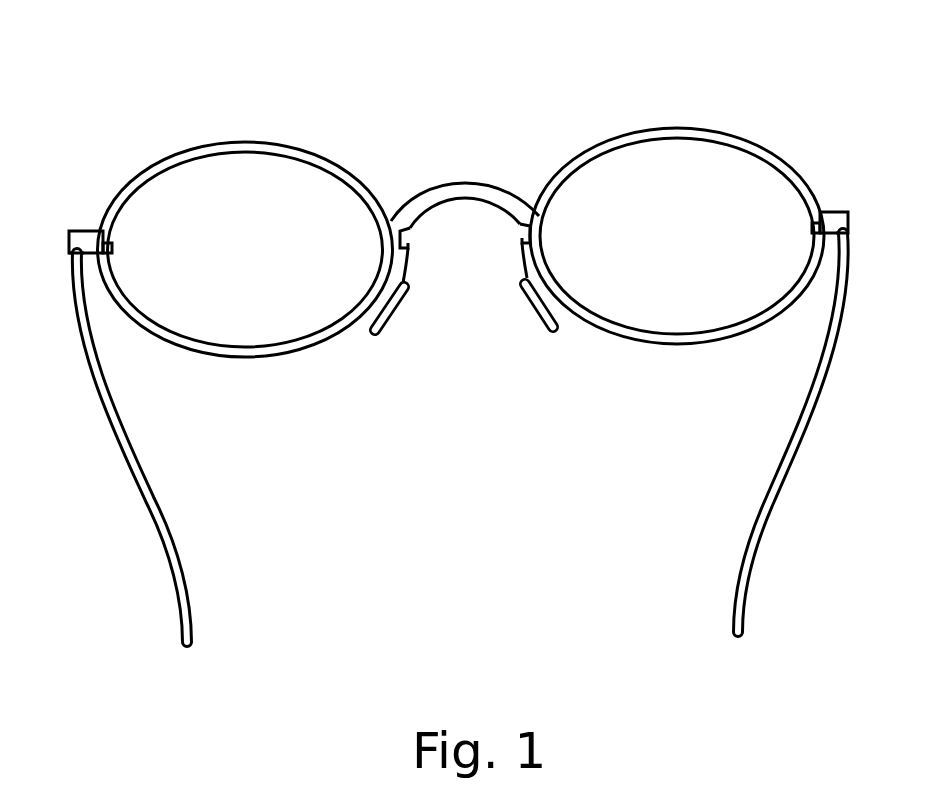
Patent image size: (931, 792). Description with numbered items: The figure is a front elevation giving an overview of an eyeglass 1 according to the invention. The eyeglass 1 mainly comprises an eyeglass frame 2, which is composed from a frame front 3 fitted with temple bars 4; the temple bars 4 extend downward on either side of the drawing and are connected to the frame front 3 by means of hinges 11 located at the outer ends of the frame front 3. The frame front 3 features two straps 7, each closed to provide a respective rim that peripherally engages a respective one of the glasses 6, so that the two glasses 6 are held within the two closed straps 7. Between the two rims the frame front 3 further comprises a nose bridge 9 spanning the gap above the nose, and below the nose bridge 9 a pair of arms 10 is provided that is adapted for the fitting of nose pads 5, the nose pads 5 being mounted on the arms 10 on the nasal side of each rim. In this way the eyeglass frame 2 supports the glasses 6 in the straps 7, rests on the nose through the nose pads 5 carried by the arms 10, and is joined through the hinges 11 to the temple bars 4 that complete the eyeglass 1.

The eyeglass 1 is at (384, 80).
The eyeglass frame 2 is at (110, 178).
The frame front 3 is at (170, 152).
The temple bars 4 is at (160, 482).
The nose pads 5 is at (375, 336).
The glasses 6 is at (270, 262).
The straps 7 is at (224, 141).
The nose bridge 9 is at (468, 183).
The arms 10 is at (517, 260).
The hinges 11 is at (82, 230).